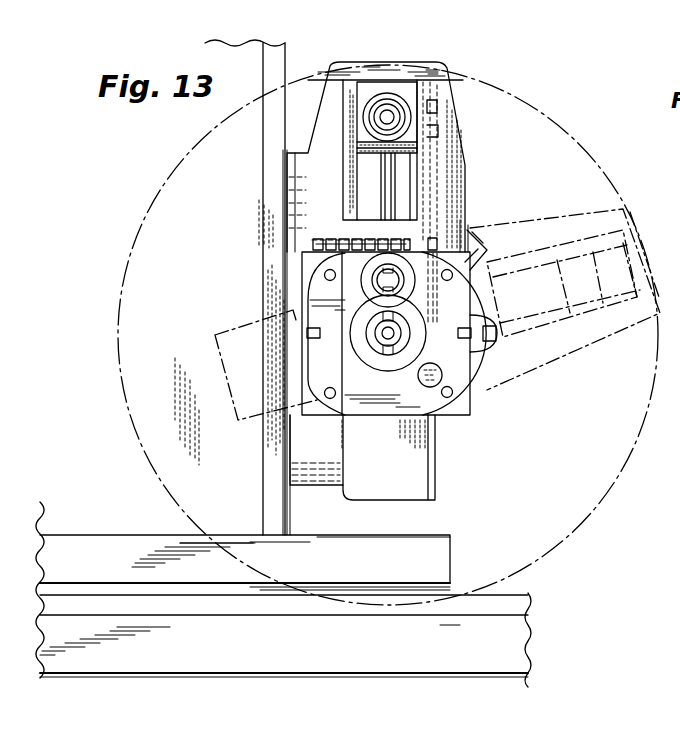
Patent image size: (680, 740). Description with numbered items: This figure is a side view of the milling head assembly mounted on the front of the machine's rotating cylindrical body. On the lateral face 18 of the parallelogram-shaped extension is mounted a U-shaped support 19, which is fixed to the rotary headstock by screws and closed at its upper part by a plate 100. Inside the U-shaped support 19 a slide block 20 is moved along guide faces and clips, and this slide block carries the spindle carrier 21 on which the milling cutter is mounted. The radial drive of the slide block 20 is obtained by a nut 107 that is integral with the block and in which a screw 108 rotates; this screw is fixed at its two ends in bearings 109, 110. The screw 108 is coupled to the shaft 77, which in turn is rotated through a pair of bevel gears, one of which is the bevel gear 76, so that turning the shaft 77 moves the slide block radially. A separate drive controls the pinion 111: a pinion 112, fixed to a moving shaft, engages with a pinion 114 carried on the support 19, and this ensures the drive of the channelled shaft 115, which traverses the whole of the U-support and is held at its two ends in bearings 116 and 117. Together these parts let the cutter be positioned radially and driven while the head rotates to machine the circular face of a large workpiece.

The lateral face 18 is at (305, 244).
The U-shaped support 19 is at (459, 168).
The slide block 20 is at (407, 73).
The spindle carrier 21 is at (371, 107).
The bevel gear 76 is at (470, 390).
The shaft 77 is at (433, 305).
The plate 100 is at (407, 88).
The nut 107 is at (439, 108).
The screw 108 is at (441, 137).
The bearing 109 is at (430, 73).
The bearing 110 is at (463, 222).
The pinion 111 is at (379, 118).
The pinion 112 is at (333, 238).
The pinion 114 is at (382, 241).
The channelled shaft 115 is at (381, 176).
The bearing 116 is at (379, 80).
The bearing 117 is at (394, 235).